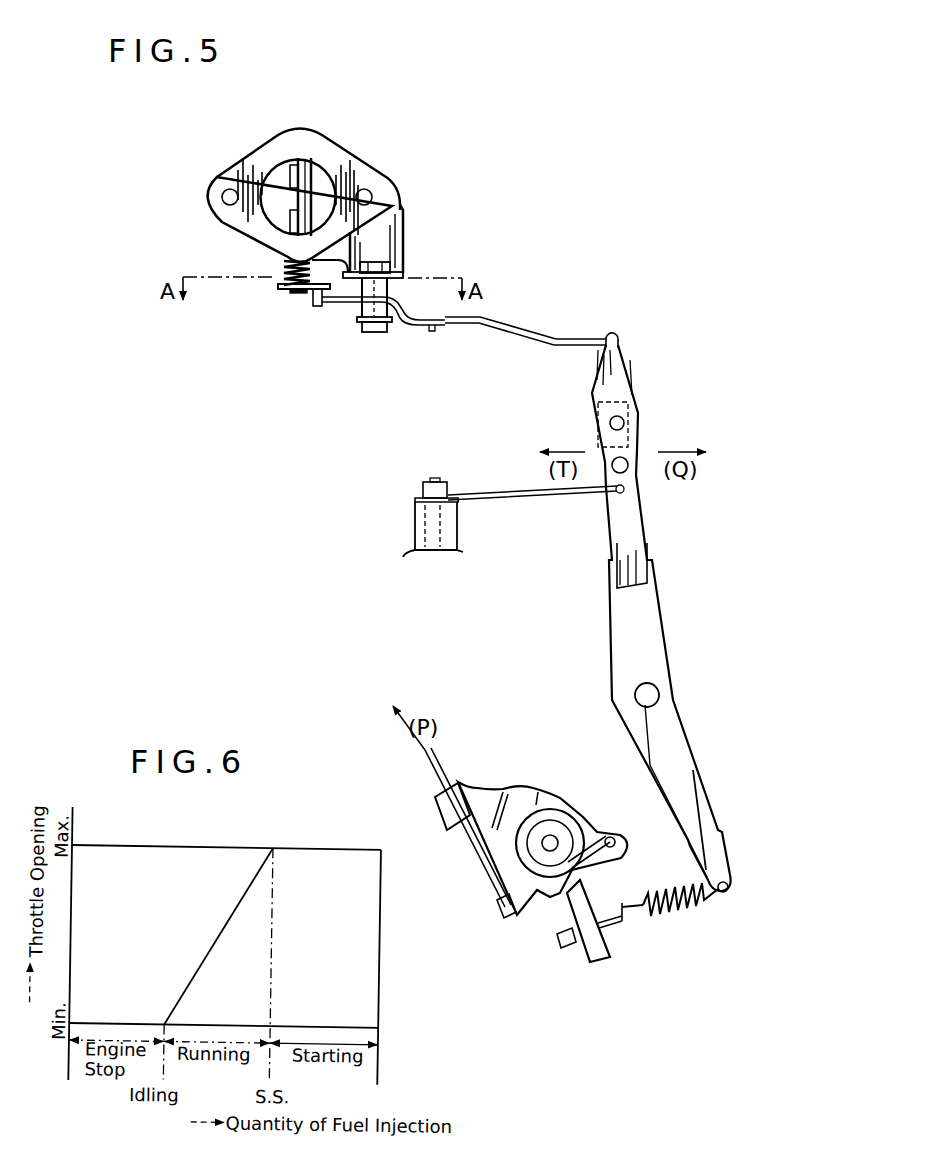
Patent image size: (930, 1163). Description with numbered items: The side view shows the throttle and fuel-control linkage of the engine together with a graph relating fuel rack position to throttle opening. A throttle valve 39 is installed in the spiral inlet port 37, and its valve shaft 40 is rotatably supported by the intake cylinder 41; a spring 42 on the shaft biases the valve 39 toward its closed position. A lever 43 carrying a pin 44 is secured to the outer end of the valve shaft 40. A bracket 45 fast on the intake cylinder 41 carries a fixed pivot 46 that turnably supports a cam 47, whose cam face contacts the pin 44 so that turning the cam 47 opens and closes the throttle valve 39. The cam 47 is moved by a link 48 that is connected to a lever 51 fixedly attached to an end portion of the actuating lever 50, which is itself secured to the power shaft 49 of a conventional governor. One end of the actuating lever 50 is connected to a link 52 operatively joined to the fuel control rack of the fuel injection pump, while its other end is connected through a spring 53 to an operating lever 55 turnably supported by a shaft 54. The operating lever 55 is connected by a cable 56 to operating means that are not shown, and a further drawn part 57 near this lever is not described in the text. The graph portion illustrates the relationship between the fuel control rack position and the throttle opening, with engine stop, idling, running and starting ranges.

The spiral inlet port 37 is at (352, 187).
The throttle valve 39 is at (294, 186).
The valve shaft 40 is at (300, 224).
The intake cylinder 41 is at (332, 152).
The spring 42 is at (290, 283).
The lever 43 is at (286, 292).
The pin 44 is at (318, 304).
The bracket 45 is at (404, 240).
The pivot 46 is at (372, 335).
The cam 47 is at (402, 308).
The link 48 is at (547, 340).
The power shaft 49 is at (648, 695).
The actuating lever 50 is at (648, 600).
The lever 51 is at (622, 380).
The link 52 is at (522, 500).
The spring 53 is at (680, 912).
The shaft 54 is at (550, 835).
The operating lever 55 is at (572, 912).
The cable 56 is at (480, 880).
The mounting bracket 57 is at (592, 850).